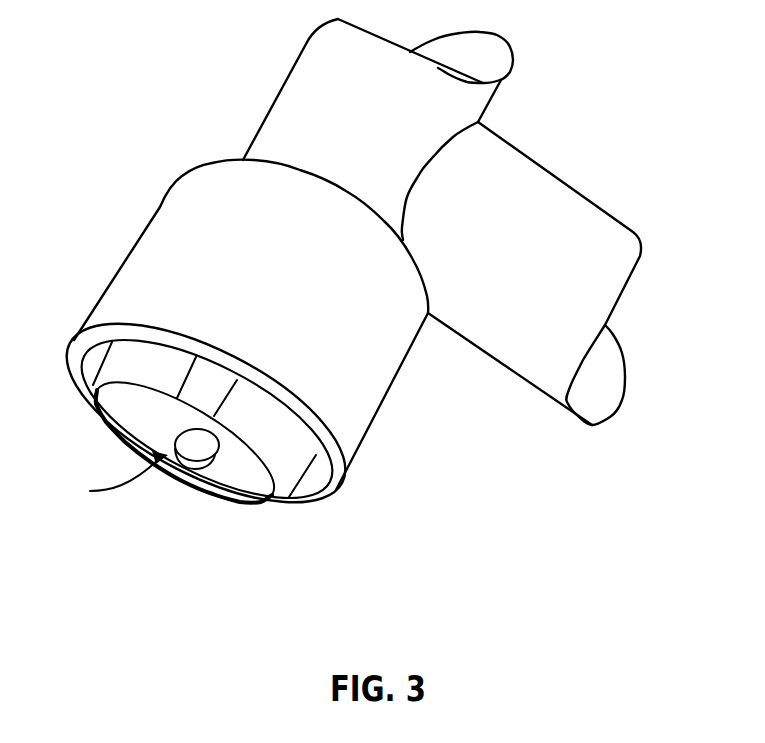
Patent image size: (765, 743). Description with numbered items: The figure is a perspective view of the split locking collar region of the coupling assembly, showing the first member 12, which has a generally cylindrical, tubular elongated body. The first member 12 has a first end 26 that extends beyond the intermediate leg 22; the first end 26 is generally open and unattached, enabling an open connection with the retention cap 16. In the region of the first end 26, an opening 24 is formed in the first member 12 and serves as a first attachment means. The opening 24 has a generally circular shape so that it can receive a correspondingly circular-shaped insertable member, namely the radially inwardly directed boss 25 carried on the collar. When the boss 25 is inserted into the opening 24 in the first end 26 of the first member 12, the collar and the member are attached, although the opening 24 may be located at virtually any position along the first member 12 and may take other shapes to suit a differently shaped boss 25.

The first member 12 is at (258, 143).
The retention cap 16 is at (362, 417).
The intermediate leg 22 is at (518, 167).
The opening 24 is at (112, 480).
The boss 25 is at (183, 470).
The first end 26 is at (240, 488).